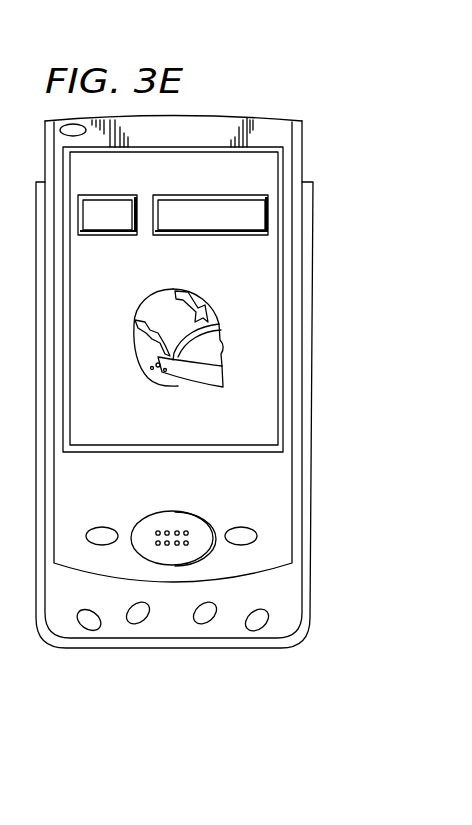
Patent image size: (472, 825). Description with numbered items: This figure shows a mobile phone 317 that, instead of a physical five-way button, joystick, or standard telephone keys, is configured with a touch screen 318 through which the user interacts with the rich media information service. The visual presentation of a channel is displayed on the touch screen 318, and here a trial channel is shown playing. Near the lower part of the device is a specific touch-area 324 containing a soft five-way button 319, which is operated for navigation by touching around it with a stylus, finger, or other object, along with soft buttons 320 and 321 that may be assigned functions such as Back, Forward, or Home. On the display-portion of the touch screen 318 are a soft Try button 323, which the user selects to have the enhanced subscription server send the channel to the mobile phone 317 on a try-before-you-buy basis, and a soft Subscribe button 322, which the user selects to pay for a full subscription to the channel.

The mobile phone 317 is at (272, 102).
The touch screen 318 is at (195, 433).
The soft 5-way button 319 is at (170, 512).
The soft button 320 is at (240, 530).
The soft button 321 is at (107, 530).
The soft Subscribe button 322 is at (210, 235).
The soft Try button 323 is at (107, 235).
The touch-area 324 is at (103, 462).